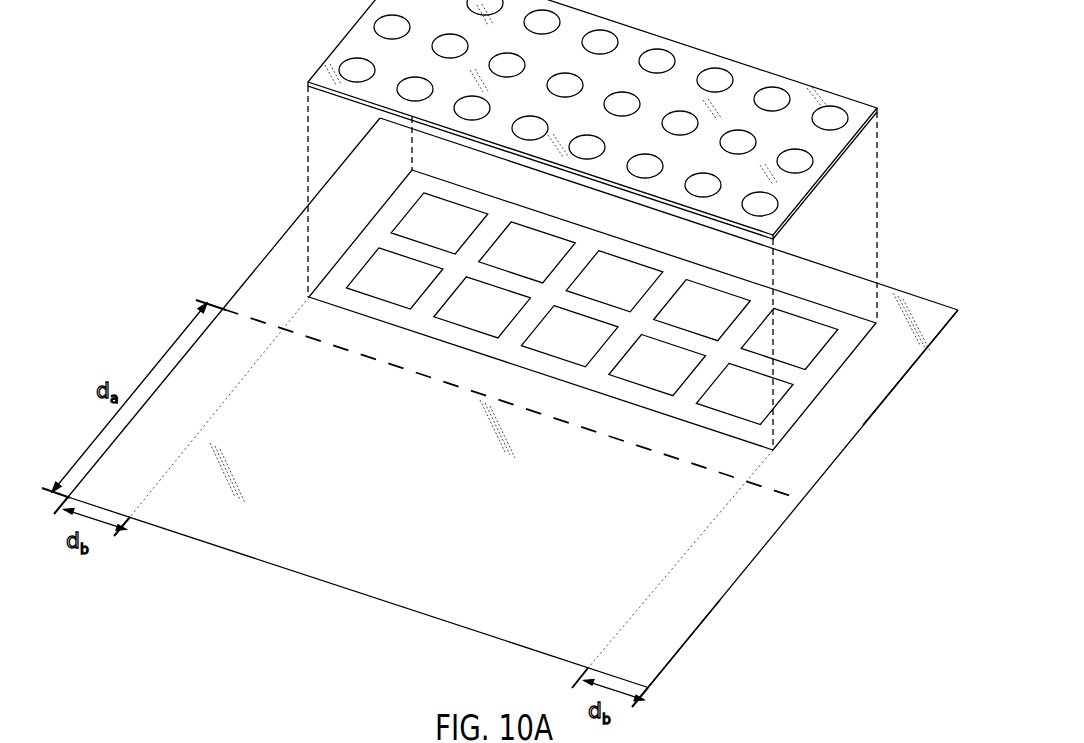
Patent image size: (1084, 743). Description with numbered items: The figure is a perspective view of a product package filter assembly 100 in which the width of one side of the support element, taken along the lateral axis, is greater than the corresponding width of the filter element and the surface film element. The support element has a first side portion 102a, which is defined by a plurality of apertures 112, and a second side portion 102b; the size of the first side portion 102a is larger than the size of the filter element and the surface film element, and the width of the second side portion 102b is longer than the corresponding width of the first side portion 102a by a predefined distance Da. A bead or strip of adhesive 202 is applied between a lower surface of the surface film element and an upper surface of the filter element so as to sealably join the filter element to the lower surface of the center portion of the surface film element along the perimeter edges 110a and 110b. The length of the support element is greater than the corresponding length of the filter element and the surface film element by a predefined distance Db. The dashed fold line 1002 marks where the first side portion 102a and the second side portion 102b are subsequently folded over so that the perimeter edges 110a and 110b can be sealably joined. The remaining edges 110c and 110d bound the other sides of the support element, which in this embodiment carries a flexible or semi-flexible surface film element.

The product package filter assembly 100 is at (793, 38).
The perimeter edge 110a is at (817, 240).
The perimeter edge 110b is at (363, 593).
The third edge of substrate 110c is at (265, 258).
The fourth edge of substrate 110d is at (873, 423).
The first side portion 102a is at (863, 298).
The second side portion 102b is at (678, 630).
The bead or strip of adhesive 202 is at (808, 408).
The apertures 112 is at (643, 378).
The fold line 1002 is at (432, 377).